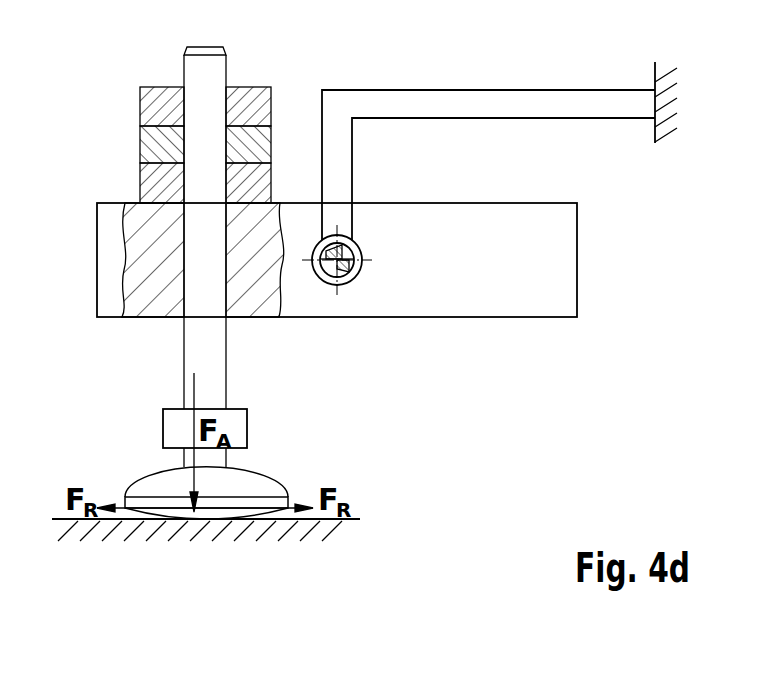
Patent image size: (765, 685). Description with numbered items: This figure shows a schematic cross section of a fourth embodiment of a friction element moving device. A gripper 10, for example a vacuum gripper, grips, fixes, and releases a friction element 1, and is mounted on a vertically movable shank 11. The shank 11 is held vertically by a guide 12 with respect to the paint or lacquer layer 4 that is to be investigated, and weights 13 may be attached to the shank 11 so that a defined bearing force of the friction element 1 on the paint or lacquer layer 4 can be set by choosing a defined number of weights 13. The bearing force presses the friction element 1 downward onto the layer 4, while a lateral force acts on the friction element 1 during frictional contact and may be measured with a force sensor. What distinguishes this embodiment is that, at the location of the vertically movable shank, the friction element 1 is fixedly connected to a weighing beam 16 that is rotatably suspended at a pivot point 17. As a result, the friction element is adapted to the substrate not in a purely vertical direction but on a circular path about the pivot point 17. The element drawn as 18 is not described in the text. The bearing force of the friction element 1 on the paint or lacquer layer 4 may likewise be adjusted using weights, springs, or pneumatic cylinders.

The friction element 1 is at (208, 512).
The paint or lacquer layer 4 is at (268, 535).
The gripper 10 is at (243, 483).
The shank 11 is at (215, 67).
The guide 12 is at (103, 261).
The weights 13 is at (147, 142).
The weighing beam 16 is at (505, 310).
The pivot point 17 is at (345, 276).
The lever arm 18 is at (488, 118).